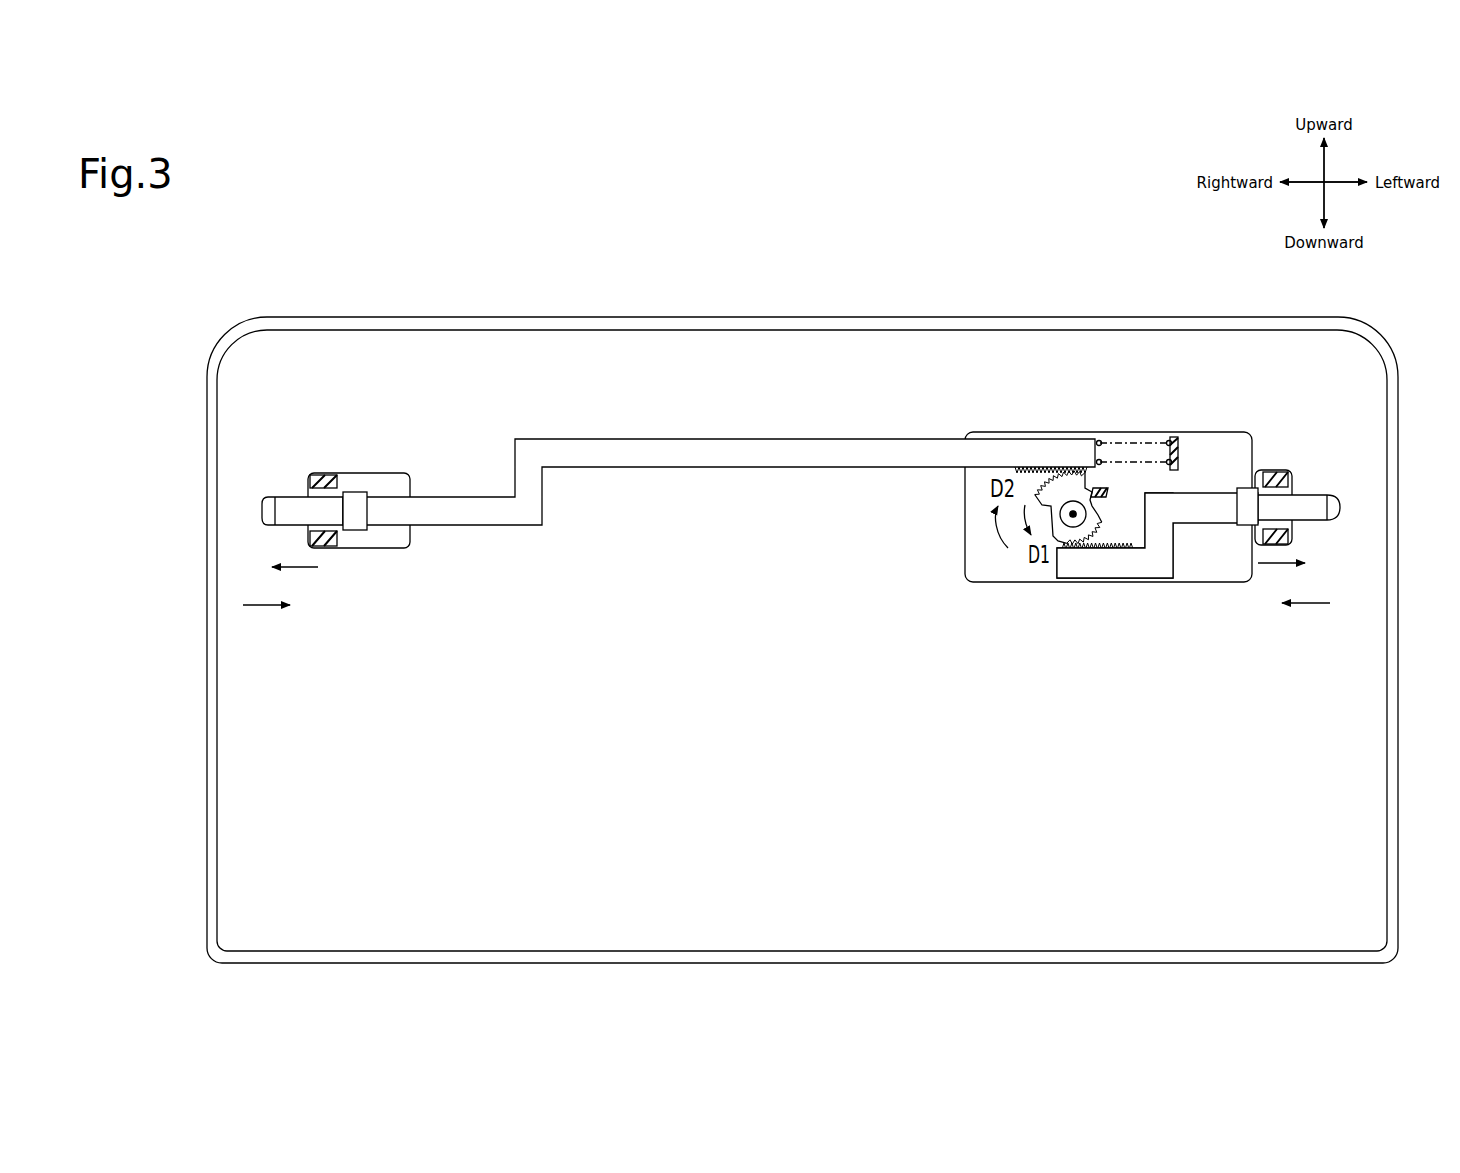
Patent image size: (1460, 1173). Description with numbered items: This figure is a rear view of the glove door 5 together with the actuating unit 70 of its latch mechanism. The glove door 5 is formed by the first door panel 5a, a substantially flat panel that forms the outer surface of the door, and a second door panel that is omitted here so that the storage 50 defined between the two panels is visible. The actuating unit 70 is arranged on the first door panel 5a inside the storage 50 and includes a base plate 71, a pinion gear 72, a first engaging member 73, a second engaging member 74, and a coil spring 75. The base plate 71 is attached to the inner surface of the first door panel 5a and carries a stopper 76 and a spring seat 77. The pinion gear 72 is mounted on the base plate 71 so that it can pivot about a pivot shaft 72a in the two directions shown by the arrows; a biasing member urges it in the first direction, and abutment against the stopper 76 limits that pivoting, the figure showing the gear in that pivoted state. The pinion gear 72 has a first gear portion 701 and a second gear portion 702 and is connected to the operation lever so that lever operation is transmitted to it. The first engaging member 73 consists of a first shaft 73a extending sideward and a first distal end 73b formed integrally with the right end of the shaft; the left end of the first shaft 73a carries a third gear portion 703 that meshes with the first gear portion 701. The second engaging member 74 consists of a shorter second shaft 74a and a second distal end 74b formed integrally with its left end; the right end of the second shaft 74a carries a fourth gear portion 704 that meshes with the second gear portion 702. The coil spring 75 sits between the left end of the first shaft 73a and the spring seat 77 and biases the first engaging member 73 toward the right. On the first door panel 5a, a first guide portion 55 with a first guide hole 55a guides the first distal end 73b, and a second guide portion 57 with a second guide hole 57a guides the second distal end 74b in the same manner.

The glove door 5 is at (802, 611).
The first door panel 5a is at (1103, 340).
The storage 50 is at (679, 869).
The first guide portion 55 is at (363, 523).
The first guide hole 55a is at (327, 518).
The second guide portion 57 is at (1309, 483).
The second guide hole 57a is at (1293, 516).
The actuating unit 70 is at (1085, 528).
The base plate 71 is at (1220, 440).
The pinion gear 72 is at (1117, 493).
The pivot shaft 72a is at (1075, 518).
The first engaging member 73 is at (678, 459).
The first shaft 73a is at (702, 448).
The first distal end 73b is at (289, 503).
The second engaging member 74 is at (1201, 543).
The second shaft 74a is at (1195, 500).
The second distal end 74b is at (1310, 498).
The coil spring 75 is at (1100, 440).
The stopper 76 is at (1108, 488).
The spring seat 77 is at (1173, 433).
The first gear portion 701 is at (1043, 470).
The second gear portion 702 is at (1103, 508).
The third gear portion 703 is at (1015, 468).
The fourth gear portion 704 is at (1125, 548).